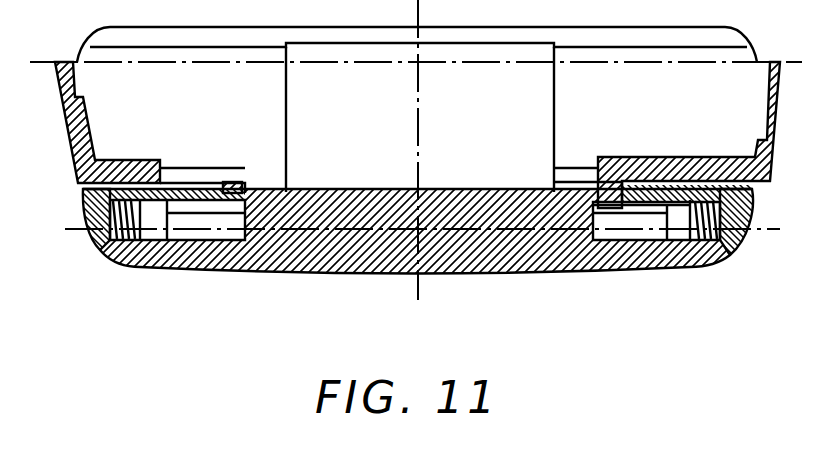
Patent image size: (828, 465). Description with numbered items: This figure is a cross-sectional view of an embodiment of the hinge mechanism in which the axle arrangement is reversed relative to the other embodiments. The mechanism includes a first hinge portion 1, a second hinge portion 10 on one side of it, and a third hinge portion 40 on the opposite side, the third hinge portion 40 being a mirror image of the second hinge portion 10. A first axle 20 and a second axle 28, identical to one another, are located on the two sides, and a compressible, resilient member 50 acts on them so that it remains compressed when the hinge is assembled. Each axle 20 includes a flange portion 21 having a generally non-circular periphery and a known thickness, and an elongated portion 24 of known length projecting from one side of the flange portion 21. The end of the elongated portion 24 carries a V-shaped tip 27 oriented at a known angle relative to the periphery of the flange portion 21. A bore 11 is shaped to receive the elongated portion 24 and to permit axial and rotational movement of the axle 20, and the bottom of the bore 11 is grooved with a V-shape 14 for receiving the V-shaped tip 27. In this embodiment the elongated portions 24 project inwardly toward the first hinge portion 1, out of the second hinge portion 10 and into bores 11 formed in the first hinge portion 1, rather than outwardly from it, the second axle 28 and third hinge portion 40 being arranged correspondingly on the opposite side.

The first hinge portion 1 is at (378, 268).
The second hinge portion 10 is at (760, 204).
The bore 11 is at (231, 182).
The V-shape groove 14 is at (253, 193).
The first axle 20 is at (648, 240).
The flange portion 21 is at (150, 263).
The elongated portion 24 is at (220, 243).
The V-shaped tip 27 is at (262, 228).
The second axle 28 is at (198, 245).
The third hinge portion 40 is at (82, 210).
The compressible, resilient member 50 is at (110, 257).